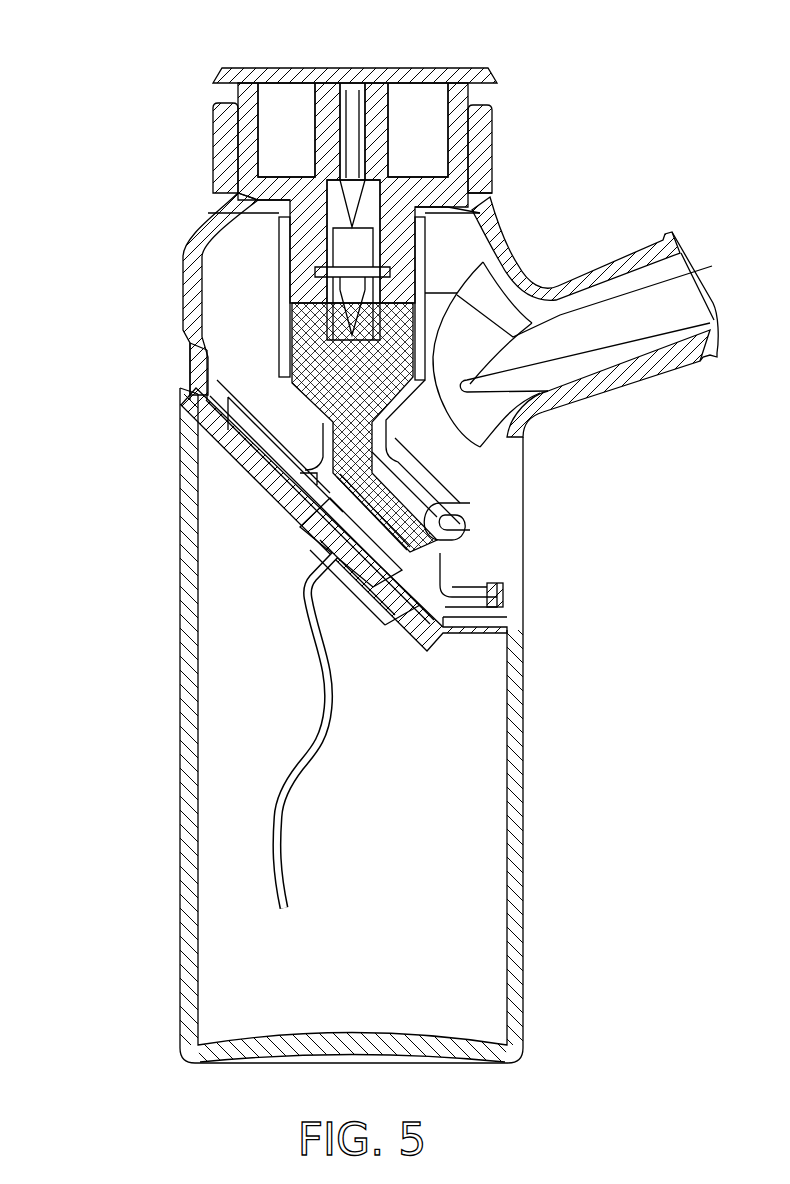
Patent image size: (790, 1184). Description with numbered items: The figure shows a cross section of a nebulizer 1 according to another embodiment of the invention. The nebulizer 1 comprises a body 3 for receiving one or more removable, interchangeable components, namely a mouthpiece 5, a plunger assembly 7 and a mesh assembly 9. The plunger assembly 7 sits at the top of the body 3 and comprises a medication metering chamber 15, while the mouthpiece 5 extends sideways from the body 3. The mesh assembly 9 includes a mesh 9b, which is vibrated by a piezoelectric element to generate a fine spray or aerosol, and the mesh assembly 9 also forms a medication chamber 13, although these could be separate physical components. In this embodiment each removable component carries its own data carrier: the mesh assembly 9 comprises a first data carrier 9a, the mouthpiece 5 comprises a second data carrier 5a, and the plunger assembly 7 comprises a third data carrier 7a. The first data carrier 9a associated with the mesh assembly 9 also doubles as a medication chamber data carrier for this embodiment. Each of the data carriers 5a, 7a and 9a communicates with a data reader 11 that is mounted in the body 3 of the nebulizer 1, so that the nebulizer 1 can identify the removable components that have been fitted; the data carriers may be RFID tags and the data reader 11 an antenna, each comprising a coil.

The nebulizer 1 is at (77, 82).
The body 3 is at (188, 365).
The mouthpiece 5 is at (450, 387).
The second data carrier 5a is at (515, 578).
The plunger assembly 7 is at (357, 160).
The third data carrier 7a is at (230, 76).
The mesh assembly 9 is at (388, 412).
The first data carrier 9a is at (292, 418).
The mesh 9b is at (403, 493).
The data reader 11 is at (203, 440).
The medication chamber 13 is at (303, 345).
The medication metering chamber 15 is at (360, 252).